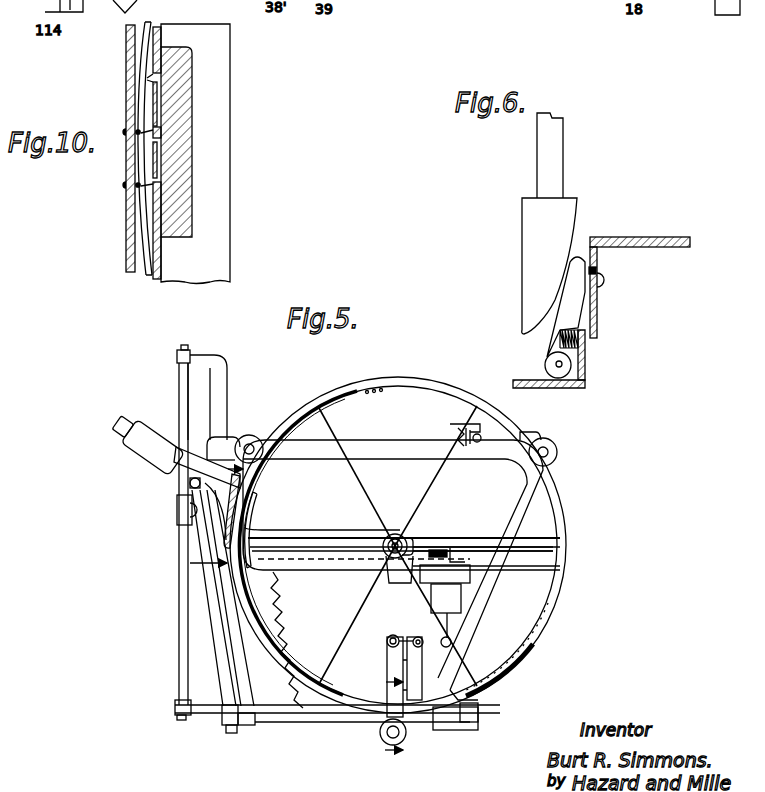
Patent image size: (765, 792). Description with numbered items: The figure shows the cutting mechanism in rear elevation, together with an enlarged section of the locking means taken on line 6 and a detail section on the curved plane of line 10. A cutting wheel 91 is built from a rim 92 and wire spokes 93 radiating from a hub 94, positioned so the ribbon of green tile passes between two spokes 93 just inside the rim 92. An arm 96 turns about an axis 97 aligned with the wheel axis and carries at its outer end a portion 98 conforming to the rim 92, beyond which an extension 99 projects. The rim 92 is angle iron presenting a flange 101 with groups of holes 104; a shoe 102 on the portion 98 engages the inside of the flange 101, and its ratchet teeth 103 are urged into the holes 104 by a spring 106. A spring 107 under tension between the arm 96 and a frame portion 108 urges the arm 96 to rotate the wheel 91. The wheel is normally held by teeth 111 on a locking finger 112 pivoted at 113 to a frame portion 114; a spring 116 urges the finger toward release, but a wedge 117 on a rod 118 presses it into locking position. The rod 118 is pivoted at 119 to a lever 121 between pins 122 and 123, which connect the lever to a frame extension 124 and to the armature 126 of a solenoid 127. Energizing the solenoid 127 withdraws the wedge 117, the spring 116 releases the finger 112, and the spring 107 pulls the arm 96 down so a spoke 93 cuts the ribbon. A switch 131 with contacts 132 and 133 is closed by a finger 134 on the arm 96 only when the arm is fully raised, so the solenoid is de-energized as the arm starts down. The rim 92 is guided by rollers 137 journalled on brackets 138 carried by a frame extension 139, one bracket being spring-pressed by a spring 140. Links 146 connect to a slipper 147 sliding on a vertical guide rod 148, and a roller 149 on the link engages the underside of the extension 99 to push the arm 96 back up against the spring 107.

In FIG. 5, the section line 6— 6 is at (394, 725).
In FIG. 5, the section line 10— 10 is at (215, 527).
In FIG. 5, the cutting wheel 91 is at (449, 375).
In FIG. 10, the rim 92 is at (215, 200).
In FIG. 6, the rim 92 is at (687, 239).
In FIG. 5, the rim 92 is at (457, 396).
In FIG. 5, the spokes 93 is at (327, 414).
In FIG. 5, the hub 94 is at (410, 536).
In FIG. 5, the arm 96 is at (330, 572).
In FIG. 5, the axis 97 is at (394, 533).
In FIG. 10, the portion 98 is at (127, 268).
In FIG. 5, the portion 98 is at (258, 512).
In FIG. 5, the extension 99 is at (178, 438).
In FIG. 10, the flange 101 is at (160, 42).
In FIG. 6, the flange 101 is at (597, 303).
In FIG. 5, the flange 101 is at (409, 381).
In FIG. 10, the shoe 102 is at (177, 115).
In FIG. 5, the shoe 102 is at (226, 522).
In FIG. 10, the ratchet teeth 103 is at (153, 191).
In FIG. 10, the holes 104 is at (156, 85).
In FIG. 6, the holes 104 is at (597, 270).
In FIG. 5, the holes 104 is at (366, 384).
In FIG. 10, the spring 106 is at (157, 78).
In FIG. 5, the spring 107 is at (297, 644).
In FIG. 5, the portion of the frame 108 is at (298, 713).
In FIG. 6, the teeth 111 is at (604, 281).
In FIG. 5, the teeth 111 is at (417, 713).
In FIG. 6, the locking finger 112 is at (600, 325).
In FIG. 5, the locking finger 112 is at (478, 714).
In FIG. 6, the pivot 113 is at (560, 376).
In FIG. 6, the portion of the frame 114 is at (585, 384).
In FIG. 5, the portion of the frame 114 is at (330, 713).
In FIG. 6, the spring 116 is at (578, 340).
In FIG. 6, the wedge 117 is at (528, 242).
In FIG. 5, the wedge 117 is at (482, 700).
In FIG. 6, the rod 118 is at (558, 147).
In FIG. 5, the rod 118 is at (423, 654).
In FIG. 5, the pivot 119 is at (416, 636).
In FIG. 5, the lever 121 is at (390, 636).
In FIG. 5, the pin 122 is at (387, 643).
In FIG. 5, the pin 123 is at (450, 641).
In FIG. 5, the extension of the frame 124 is at (388, 674).
In FIG. 5, the armature 126 is at (450, 627).
In FIG. 5, the solenoid 127 is at (452, 598).
In FIG. 5, the switch 131 is at (479, 547).
In FIG. 5, the contact 132 is at (471, 544).
In FIG. 5, the contact 133 is at (455, 560).
In FIG. 5, the finger 134 is at (432, 548).
In FIG. 5, the rollers 137 is at (558, 452).
In FIG. 5, the bracket 138 is at (536, 432).
In FIG. 5, the extension of the frame 139 is at (533, 483).
In FIG. 5, the spring 140 is at (458, 432).
In FIG. 5, the links 146 is at (224, 678).
In FIG. 5, the slipper 147 is at (177, 520).
In FIG. 5, the guide rod 148 is at (179, 668).
In FIG. 5, the roller 149 is at (189, 483).